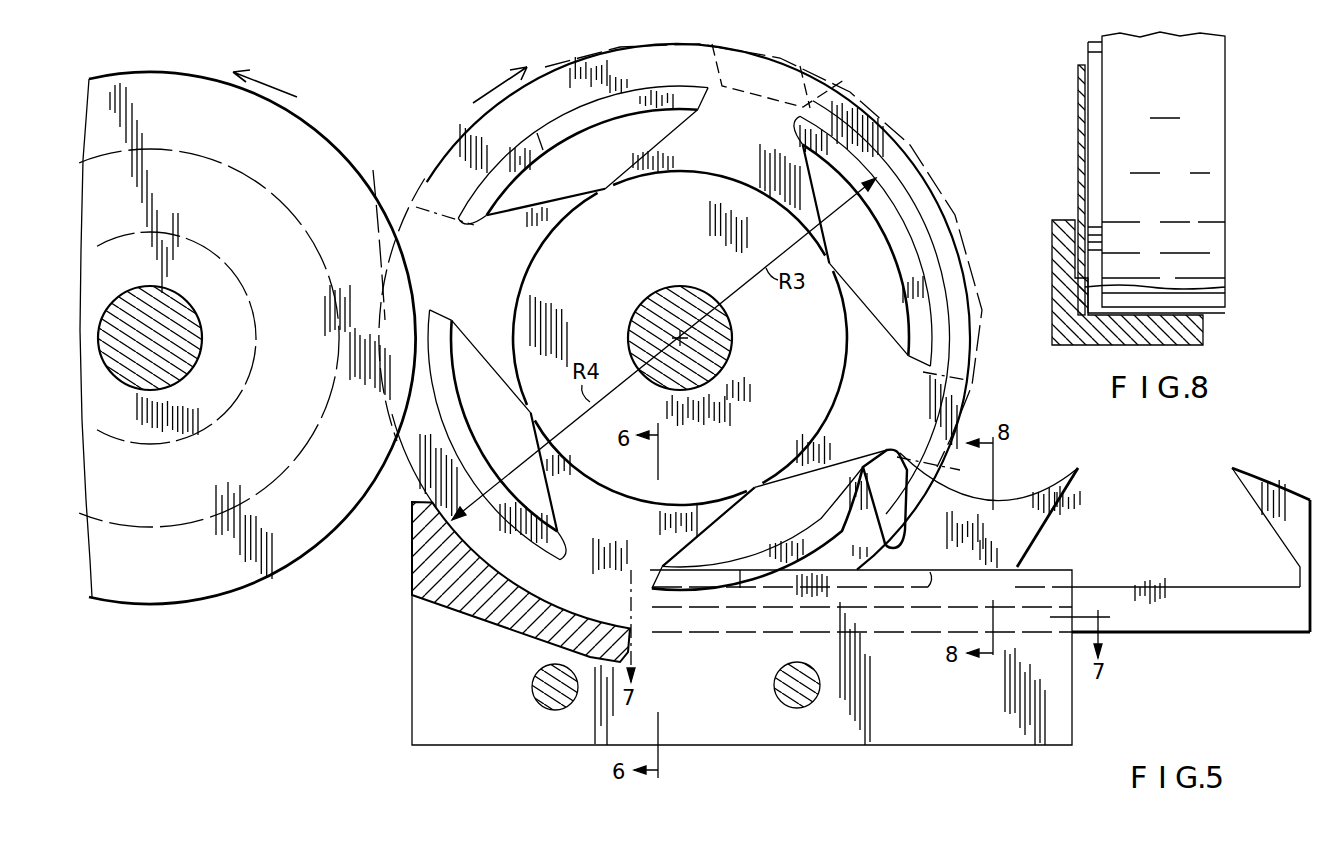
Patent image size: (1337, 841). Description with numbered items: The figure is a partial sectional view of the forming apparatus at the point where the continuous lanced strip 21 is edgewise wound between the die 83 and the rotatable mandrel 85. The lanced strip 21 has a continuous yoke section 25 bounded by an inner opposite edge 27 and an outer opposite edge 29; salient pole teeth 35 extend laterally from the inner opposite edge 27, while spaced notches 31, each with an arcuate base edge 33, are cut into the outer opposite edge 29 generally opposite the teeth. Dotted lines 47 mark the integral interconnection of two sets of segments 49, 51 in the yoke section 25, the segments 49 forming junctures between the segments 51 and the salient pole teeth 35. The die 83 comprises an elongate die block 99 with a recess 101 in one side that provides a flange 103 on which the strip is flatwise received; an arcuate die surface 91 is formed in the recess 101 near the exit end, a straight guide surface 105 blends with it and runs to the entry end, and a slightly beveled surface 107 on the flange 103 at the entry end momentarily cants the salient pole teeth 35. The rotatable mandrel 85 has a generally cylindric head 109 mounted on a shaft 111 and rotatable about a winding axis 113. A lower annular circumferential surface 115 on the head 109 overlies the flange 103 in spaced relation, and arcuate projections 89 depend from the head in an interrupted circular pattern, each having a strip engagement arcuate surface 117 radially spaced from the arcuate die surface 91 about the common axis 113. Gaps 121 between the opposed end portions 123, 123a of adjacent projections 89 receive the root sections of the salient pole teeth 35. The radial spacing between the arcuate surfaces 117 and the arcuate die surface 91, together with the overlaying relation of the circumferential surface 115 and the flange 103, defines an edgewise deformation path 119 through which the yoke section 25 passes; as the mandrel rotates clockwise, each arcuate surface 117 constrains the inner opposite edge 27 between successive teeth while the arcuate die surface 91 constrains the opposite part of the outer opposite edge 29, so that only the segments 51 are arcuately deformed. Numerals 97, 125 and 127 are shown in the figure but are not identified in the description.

In FIG. 5, the lanced strip 21 is at (839, 609).
In FIG. 5, the yoke section 25 is at (426, 500).
In FIG. 8, the yoke section 25 is at (1200, 287).
In FIG. 5, the inner opposite edge 27 is at (1192, 586).
In FIG. 5, the outer opposite edge 29 is at (1218, 636).
In FIG. 5, the notches 31 is at (790, 48).
In FIG. 5, the base edge 33 is at (790, 73).
In FIG. 5, the salient pole teeth 35 is at (673, 182).
In FIG. 8, the salient pole teeth 35 is at (1080, 78).
In FIG. 5, the dotted lines 47 is at (714, 48).
In FIG. 5, the segments 49 is at (790, 64).
In FIG. 5, the segments 51 is at (616, 52).
In FIG. 5, the die 83 is at (720, 640).
In FIG. 8, the die 83 is at (1141, 301).
In FIG. 5, the rotatable mandrel 85 is at (750, 337).
In FIG. 8, the rotatable mandrel 85 is at (1267, 56).
In FIG. 5, the arcuate projections 89 is at (612, 120).
In FIG. 8, the arcuate projections 89 is at (1096, 116).
In FIG. 5, the arcuate die surface 91 is at (494, 627).
In FIG. 5, the drive disk 97 is at (320, 119).
In FIG. 5, the die block 99 is at (872, 745).
In FIG. 8, the die block 99 is at (1206, 342).
In FIG. 5, the recess 101 is at (1055, 570).
In FIG. 8, the recess 101 is at (1206, 320).
In FIG. 8, the flange 103 is at (1052, 226).
In FIG. 5, the guide surface 105 is at (732, 634).
In FIG. 5, the beveled surface 107 is at (890, 628).
In FIG. 8, the beveled surface 107 is at (1058, 290).
In FIG. 5, the head 109 is at (722, 264).
In FIG. 8, the head 109 is at (1218, 158).
In FIG. 5, the shaft 111 is at (728, 337).
In FIG. 5, the axis 113 is at (642, 302).
In FIG. 5, the circumferential surface 115 is at (907, 167).
In FIG. 8, the circumferential surface 115 is at (1104, 264).
In FIG. 5, the arcuate surfaces 117 is at (541, 150).
In FIG. 8, the arcuate surfaces 117 is at (1096, 226).
In FIG. 5, the edgewise deformation path 119 is at (504, 605).
In FIG. 5, the gaps 121 is at (442, 277).
In FIG. 5, the end portion 123 is at (712, 97).
In FIG. 5, the end portion 123a is at (800, 118).
In FIG. 5, the drive shaft 125 is at (205, 325).
In FIG. 5, the disk edge 127 is at (376, 176).